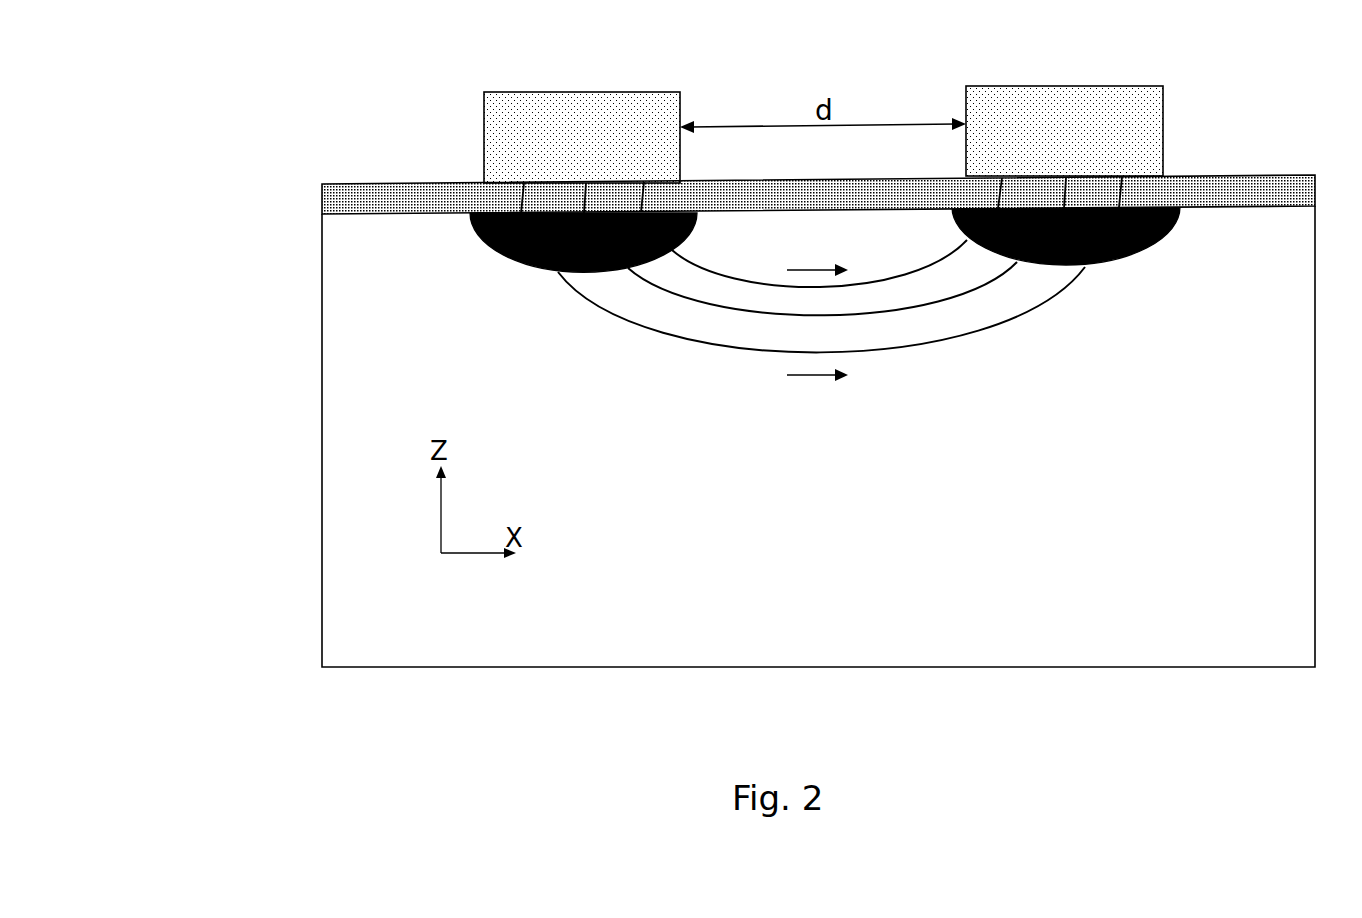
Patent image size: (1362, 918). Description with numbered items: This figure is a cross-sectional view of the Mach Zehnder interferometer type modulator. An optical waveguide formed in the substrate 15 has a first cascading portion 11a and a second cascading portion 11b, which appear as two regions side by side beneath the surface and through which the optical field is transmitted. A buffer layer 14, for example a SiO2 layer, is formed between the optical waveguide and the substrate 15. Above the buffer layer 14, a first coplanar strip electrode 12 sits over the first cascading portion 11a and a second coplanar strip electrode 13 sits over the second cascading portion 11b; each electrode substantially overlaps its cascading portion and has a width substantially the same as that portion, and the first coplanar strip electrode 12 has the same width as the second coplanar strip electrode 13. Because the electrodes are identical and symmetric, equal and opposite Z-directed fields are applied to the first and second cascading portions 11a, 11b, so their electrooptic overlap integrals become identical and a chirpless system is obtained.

The first cascading portion 11a is at (485, 249).
The second cascading portion 11b is at (1167, 235).
The first coplanar strip electrode 12 is at (512, 117).
The second coplanar strip electrode 13 is at (1142, 123).
The buffer layer 14 is at (338, 196).
The substrate 15 is at (366, 509).